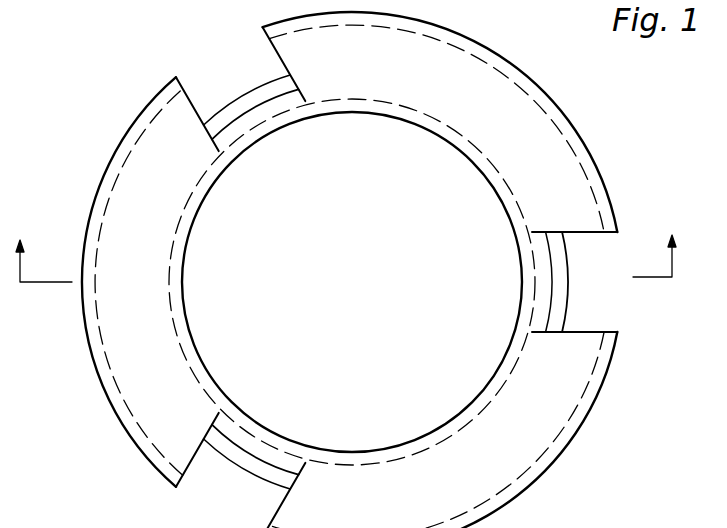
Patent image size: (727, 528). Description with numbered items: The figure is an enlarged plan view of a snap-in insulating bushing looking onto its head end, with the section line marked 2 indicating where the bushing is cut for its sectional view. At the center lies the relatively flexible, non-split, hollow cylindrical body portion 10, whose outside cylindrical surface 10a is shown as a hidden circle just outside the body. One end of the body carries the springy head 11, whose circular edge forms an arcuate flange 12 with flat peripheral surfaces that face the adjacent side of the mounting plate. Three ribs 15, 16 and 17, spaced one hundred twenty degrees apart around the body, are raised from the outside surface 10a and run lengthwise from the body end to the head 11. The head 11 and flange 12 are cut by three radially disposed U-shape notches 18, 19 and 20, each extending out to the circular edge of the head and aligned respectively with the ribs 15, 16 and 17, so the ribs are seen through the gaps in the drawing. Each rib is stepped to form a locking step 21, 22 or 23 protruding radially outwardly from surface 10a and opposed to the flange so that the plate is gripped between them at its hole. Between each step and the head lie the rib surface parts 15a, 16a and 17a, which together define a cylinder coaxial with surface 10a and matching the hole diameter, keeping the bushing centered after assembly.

The section line 2- 2 is at (344, 247).
The cylindrical body portion 10 is at (184, 322).
The outside cylindrical surface 10a is at (170, 323).
The head 11 is at (420, 78).
The arcuate flange 12 is at (345, 270).
The rib 15 is at (232, 98).
The surface part of rib 15a is at (218, 128).
The rib 16 is at (567, 259).
The surface part of rib 16a is at (548, 291).
The rib 17 is at (240, 470).
The surface part of rib 17a is at (266, 472).
The U-shape notch 18 is at (175, 78).
The U-shape notch 19 is at (604, 234).
The U-shape notch 20 is at (222, 447).
The locking step 21 is at (226, 89).
The locking step 22 is at (556, 318).
The locking step 23 is at (224, 470).